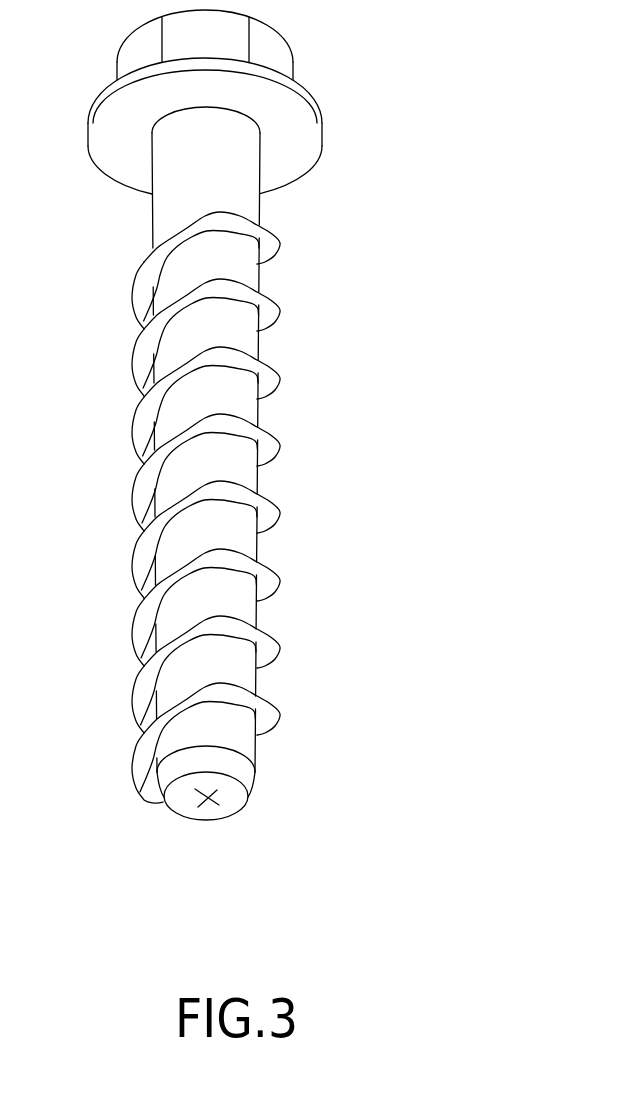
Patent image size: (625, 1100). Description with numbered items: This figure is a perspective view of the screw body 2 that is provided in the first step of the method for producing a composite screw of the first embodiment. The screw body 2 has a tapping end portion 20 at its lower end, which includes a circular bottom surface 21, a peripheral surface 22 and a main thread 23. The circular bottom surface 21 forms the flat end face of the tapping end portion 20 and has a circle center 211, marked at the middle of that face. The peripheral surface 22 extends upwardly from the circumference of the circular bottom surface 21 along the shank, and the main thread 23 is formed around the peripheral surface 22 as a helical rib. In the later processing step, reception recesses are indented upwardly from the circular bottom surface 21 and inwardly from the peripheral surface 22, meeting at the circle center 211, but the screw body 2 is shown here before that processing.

The screw body 2 is at (390, 190).
The tapping end portion 20 is at (270, 671).
The circular bottom surface 21 is at (235, 800).
The circle center 211 is at (205, 802).
The peripheral surface 22 is at (246, 344).
The main thread 23 is at (135, 431).